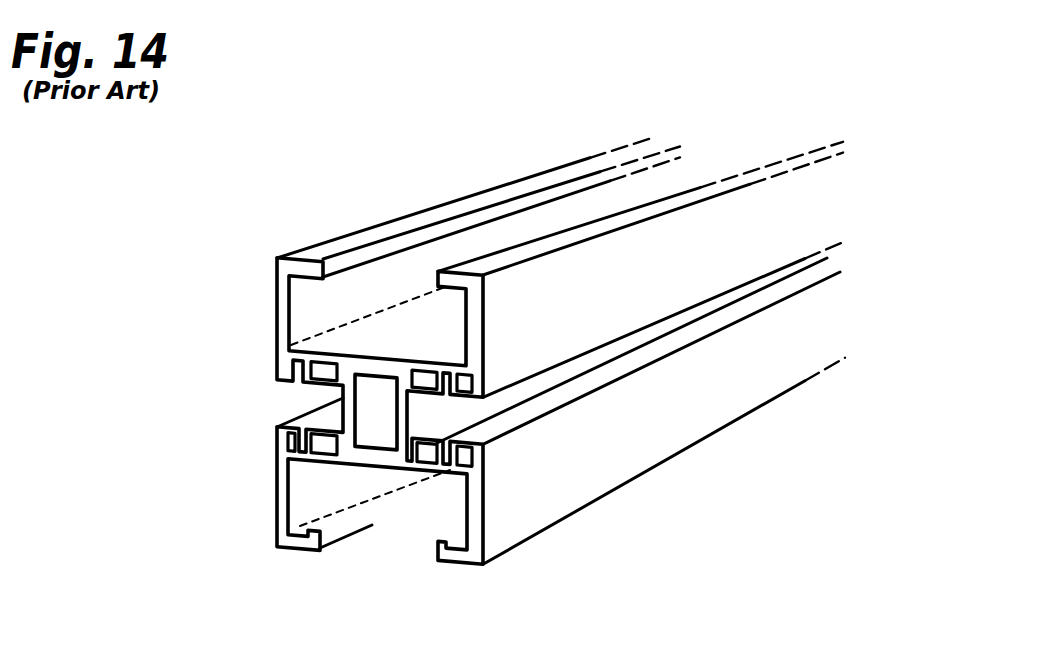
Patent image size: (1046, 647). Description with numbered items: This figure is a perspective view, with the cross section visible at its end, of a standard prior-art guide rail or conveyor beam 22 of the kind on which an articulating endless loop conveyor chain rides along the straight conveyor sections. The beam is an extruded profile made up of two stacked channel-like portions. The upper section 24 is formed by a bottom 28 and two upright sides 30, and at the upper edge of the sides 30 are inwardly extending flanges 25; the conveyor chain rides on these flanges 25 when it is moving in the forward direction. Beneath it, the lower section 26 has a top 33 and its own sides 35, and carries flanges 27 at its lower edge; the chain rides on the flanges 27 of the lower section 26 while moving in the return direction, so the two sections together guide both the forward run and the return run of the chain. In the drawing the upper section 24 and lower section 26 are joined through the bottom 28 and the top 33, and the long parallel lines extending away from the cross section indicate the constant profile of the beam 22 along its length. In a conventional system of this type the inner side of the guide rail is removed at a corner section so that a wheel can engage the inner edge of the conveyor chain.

The guide rail or conveyor beam 22 is at (236, 408).
The upper section 24 is at (266, 342).
The flanges 25 is at (457, 272).
The lower section 26 is at (266, 503).
The flanges 27 is at (300, 540).
The bottom 28 is at (372, 342).
The sides 30 is at (280, 308).
The top 33 is at (383, 462).
The sides 35 is at (485, 503).